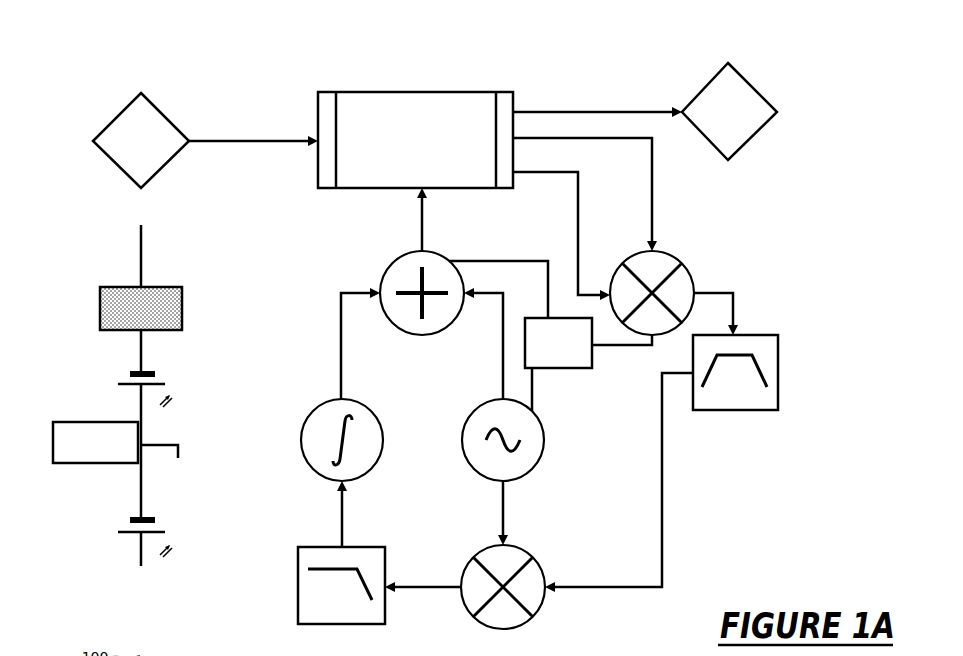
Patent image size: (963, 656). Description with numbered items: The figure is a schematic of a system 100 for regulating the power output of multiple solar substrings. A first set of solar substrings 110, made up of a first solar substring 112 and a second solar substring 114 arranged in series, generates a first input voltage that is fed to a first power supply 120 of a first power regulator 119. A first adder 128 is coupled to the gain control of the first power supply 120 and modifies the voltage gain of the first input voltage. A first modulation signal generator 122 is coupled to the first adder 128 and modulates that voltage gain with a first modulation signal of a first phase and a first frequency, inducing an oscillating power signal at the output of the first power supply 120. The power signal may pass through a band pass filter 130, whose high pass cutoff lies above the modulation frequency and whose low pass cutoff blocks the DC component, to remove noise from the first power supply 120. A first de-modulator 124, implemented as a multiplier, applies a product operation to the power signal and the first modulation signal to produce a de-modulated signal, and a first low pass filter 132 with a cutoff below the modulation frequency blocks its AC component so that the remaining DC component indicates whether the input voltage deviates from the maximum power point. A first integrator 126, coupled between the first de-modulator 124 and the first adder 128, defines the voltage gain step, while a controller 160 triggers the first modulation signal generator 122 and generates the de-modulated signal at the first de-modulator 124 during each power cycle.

The system 100 is at (133, 53).
The first set of solar substrings 110 is at (76, 362).
The first solar substring 112 is at (166, 378).
The second solar substring 114 is at (167, 521).
The first power regulator 119 is at (330, 240).
The first power supply 120 is at (373, 92).
The first modulation signal generator 122 is at (532, 469).
The first de-modulator 124 is at (539, 564).
The first integrator 126 is at (317, 410).
The first adder 128 is at (394, 258).
The band pass filter 130 is at (738, 413).
The first low pass filter 132 is at (386, 561).
The controller 160 is at (597, 364).